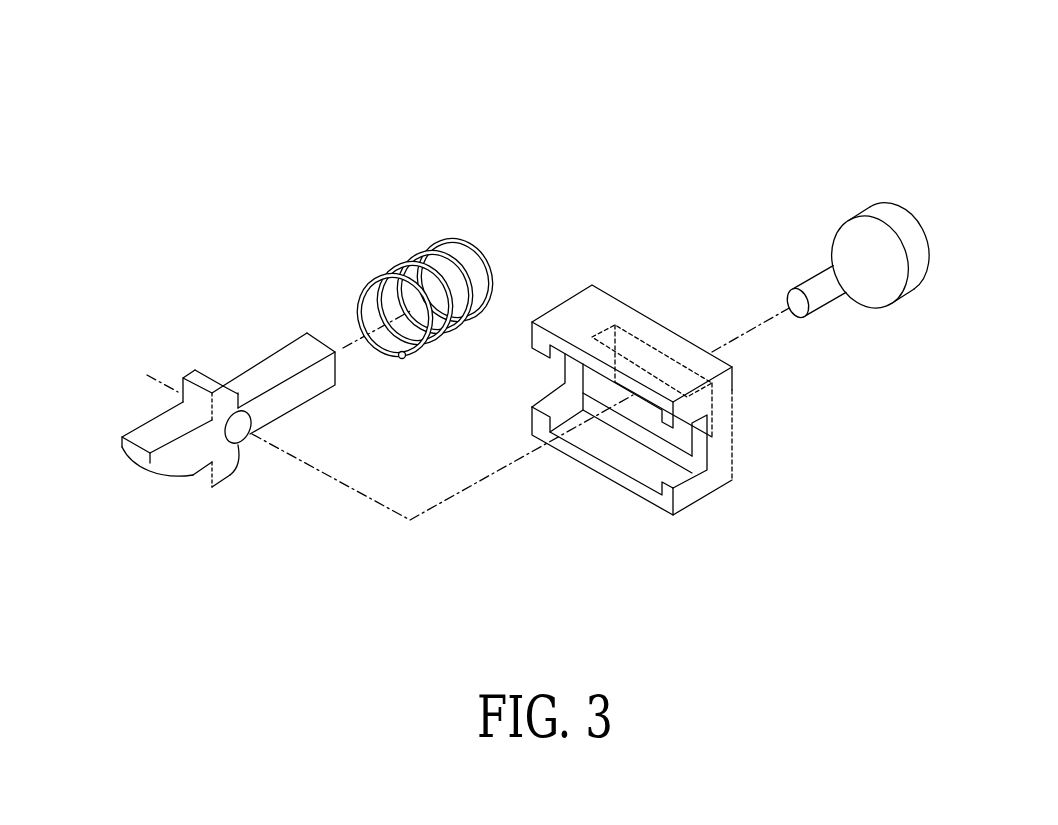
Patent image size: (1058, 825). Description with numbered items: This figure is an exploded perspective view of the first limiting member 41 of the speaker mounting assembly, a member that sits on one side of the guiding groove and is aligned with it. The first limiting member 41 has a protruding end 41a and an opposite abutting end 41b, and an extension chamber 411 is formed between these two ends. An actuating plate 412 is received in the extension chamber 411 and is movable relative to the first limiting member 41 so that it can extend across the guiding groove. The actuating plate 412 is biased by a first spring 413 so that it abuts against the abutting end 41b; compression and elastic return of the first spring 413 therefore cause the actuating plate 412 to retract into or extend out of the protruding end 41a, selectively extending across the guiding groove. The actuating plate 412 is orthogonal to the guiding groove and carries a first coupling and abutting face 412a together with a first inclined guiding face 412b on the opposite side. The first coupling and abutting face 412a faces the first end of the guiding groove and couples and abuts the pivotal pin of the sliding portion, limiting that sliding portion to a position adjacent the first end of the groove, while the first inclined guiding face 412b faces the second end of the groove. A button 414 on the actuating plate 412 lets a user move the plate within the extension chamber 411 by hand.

The first limiting member 41 is at (577, 122).
The extension chamber 411 is at (617, 445).
The protruding end 41a is at (712, 477).
The abutting end 41b is at (562, 303).
The actuating plate 412 is at (265, 368).
The first coupling and abutting face 412a is at (158, 435).
The first inclined guiding face 412b is at (178, 478).
The first spring 413 is at (412, 255).
The button 414 is at (890, 212).